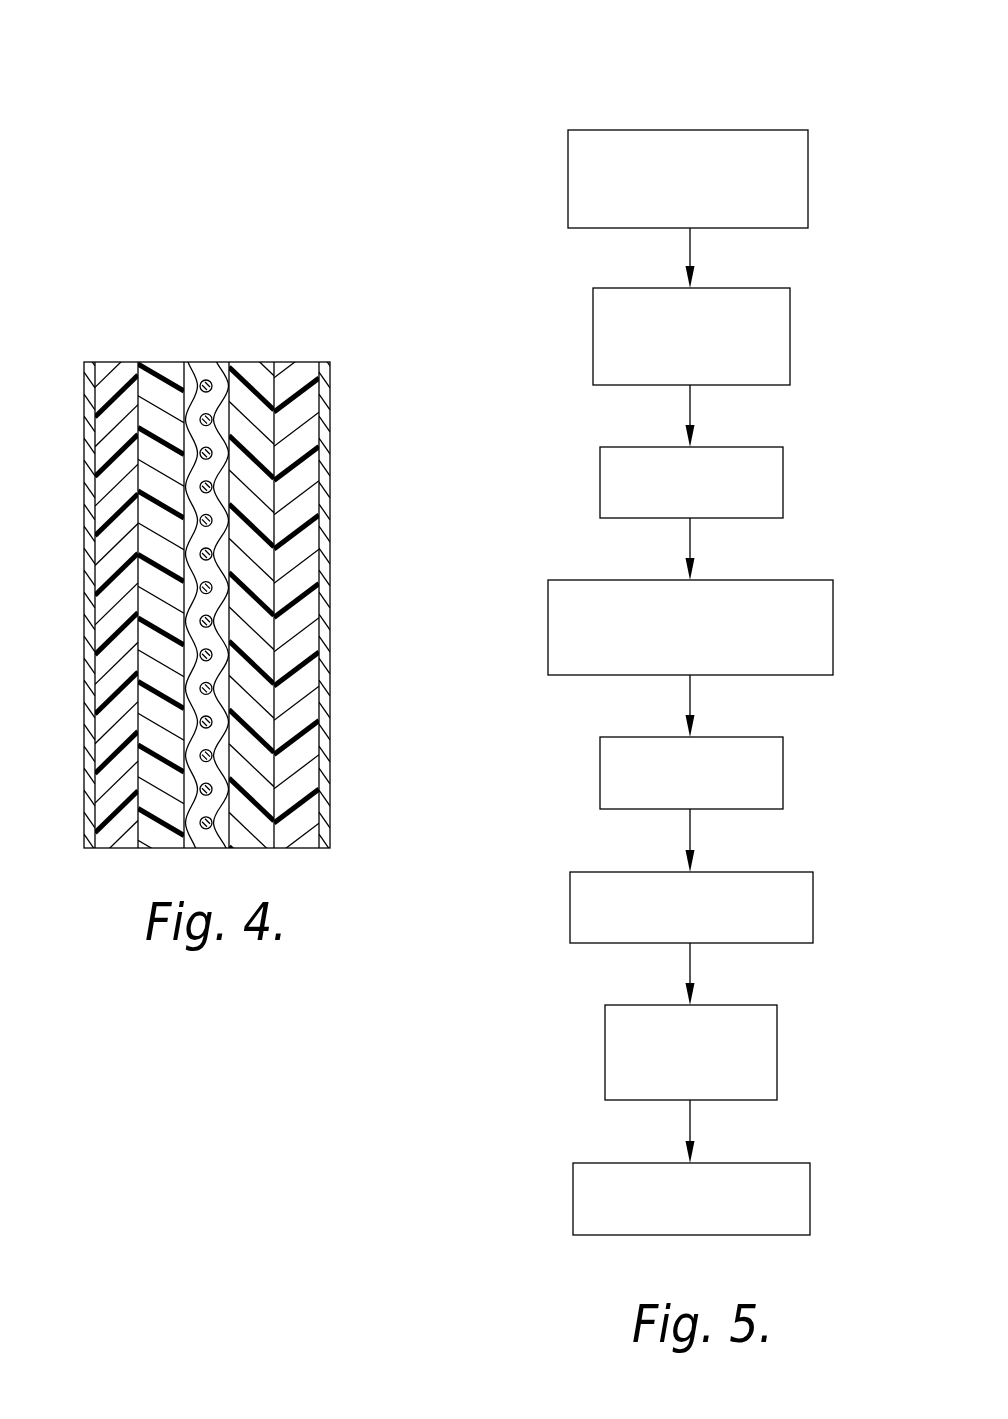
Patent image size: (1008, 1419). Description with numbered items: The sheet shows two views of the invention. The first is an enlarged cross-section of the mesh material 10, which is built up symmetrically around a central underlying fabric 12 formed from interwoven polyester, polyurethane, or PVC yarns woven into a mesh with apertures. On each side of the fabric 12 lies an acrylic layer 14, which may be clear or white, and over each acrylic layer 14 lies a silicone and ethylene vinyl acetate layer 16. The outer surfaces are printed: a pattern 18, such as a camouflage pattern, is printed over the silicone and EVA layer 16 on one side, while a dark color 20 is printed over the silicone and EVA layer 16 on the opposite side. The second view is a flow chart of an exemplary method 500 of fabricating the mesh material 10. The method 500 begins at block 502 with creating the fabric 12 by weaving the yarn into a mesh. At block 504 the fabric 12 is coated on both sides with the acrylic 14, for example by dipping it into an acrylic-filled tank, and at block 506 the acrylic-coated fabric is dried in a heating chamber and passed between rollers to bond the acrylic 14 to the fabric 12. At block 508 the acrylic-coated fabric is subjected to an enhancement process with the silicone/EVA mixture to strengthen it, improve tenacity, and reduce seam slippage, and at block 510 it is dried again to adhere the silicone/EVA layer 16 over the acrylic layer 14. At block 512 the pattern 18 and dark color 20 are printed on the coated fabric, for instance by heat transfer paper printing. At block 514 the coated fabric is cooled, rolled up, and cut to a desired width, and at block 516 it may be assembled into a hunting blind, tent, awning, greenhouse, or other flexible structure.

In FIG. 4, the mesh material 10 is at (378, 380).
In FIG. 4, the fabric 12 is at (213, 368).
In FIG. 4, the acrylic layer 14 is at (157, 368).
In FIG. 4, the silicone and ethylene vinyl acetate layer 16 is at (112, 368).
In FIG. 4, the pattern 18 is at (95, 598).
In FIG. 4, the dark color 20 is at (322, 600).
In FIG. 5, the method 500 is at (590, 80).
In FIG. 5, the block 502 is at (803, 140).
In FIG. 5, the block 504 is at (785, 298).
In FIG. 5, the block 506 is at (780, 457).
In FIG. 5, the block 508 is at (825, 590).
In FIG. 5, the block 510 is at (773, 746).
In FIG. 5, the block 512 is at (803, 878).
In FIG. 5, the block 514 is at (773, 1017).
In FIG. 5, the block 516 is at (800, 1170).